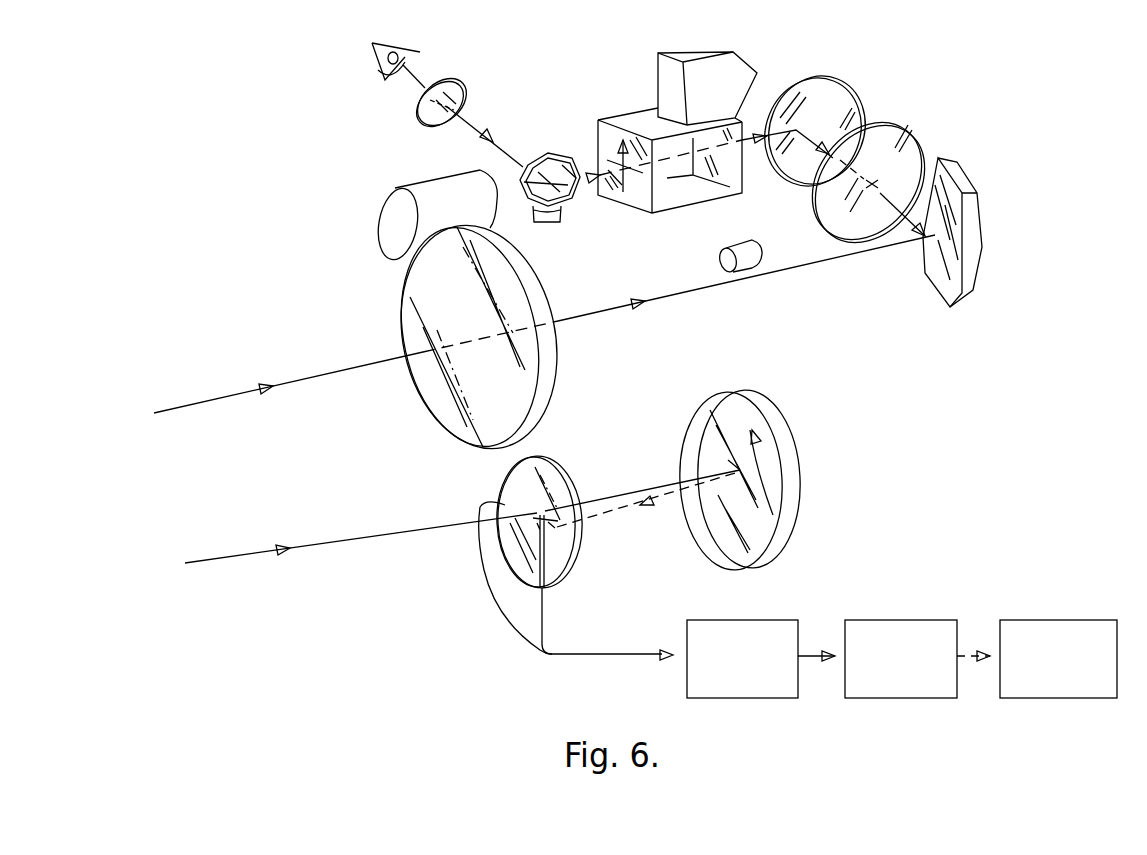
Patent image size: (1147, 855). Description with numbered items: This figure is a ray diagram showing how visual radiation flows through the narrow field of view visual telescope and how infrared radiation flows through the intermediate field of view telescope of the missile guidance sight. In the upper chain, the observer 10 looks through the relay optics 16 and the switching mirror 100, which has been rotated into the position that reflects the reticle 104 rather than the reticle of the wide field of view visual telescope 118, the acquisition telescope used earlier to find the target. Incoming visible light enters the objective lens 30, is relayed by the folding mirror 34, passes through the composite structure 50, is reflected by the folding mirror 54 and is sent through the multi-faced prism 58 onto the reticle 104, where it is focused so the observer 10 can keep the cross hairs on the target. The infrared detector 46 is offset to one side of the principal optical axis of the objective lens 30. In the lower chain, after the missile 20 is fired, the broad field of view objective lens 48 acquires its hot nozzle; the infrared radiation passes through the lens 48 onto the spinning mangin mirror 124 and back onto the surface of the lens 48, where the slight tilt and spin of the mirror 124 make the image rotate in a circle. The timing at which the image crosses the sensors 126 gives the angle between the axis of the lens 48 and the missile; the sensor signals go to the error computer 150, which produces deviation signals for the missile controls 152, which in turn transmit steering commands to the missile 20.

The observer 10 is at (399, 47).
The relay optics 16 is at (450, 84).
The wide field of view visual telescope 118 is at (398, 188).
The switching mirror 100 is at (553, 158).
The multi-faced prism 58 is at (709, 170).
The reticle 104 is at (622, 188).
The infrared detector 46 is at (755, 244).
The folding mirror 54 is at (845, 84).
The composite structure 50 is at (897, 128).
The folding mirror 34 is at (985, 238).
The objective lens 30 is at (548, 352).
The broad field of view objective lens 48 is at (560, 460).
The sensors 126 is at (555, 580).
The spinning mangin mirror 124 is at (793, 458).
The error computer 150 is at (757, 610).
The missile controls 152 is at (912, 610).
The missile 20 is at (1048, 622).